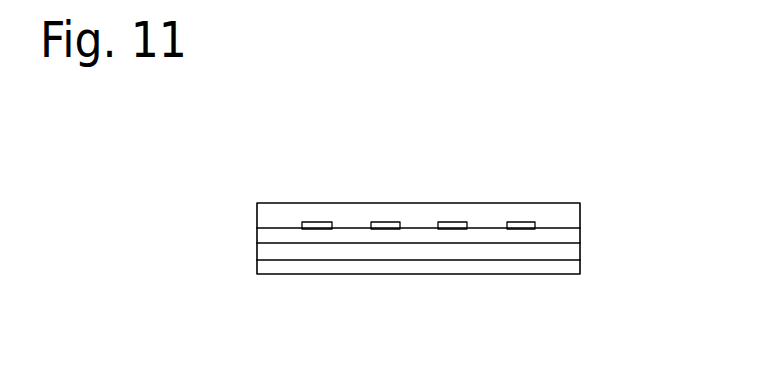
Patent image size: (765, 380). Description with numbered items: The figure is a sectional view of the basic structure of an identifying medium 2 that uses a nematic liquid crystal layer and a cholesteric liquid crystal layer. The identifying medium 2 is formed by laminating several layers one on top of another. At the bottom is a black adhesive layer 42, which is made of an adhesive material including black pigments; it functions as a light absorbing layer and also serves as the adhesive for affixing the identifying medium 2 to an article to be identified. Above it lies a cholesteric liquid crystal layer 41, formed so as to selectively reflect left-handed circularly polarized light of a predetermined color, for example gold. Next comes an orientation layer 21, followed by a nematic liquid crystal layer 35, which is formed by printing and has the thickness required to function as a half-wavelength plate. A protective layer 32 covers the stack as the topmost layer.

The identifying medium 2 is at (602, 178).
The orientation layer 21 is at (553, 237).
The protective layer 32 is at (272, 212).
The nematic liquid crystal layer 35 is at (313, 223).
The cholesteric liquid crystal layer 41 is at (570, 253).
The black adhesive layer 42 is at (573, 263).